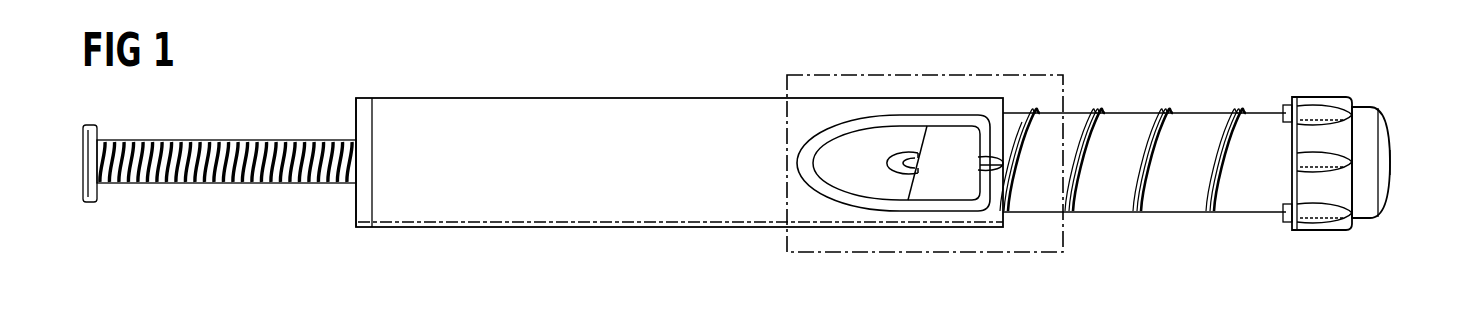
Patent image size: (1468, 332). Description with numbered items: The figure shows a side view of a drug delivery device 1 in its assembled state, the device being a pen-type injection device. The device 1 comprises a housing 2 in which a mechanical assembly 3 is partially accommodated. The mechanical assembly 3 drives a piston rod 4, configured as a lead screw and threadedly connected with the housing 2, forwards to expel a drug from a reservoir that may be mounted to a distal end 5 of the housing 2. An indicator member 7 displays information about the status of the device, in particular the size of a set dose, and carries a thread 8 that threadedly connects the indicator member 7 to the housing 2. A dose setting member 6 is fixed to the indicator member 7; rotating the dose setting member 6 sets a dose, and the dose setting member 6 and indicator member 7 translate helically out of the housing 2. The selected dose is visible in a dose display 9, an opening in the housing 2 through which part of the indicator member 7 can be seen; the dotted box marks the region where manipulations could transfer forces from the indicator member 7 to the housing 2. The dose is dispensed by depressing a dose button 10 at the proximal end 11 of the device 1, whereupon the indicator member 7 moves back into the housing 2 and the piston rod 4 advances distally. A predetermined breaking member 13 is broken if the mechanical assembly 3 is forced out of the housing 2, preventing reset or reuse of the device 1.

The drug delivery device 1 is at (518, 52).
The housing 2 is at (617, 212).
The mechanical assembly 3 is at (1199, 95).
The piston rod 4 is at (231, 150).
The distal end 5 is at (360, 112).
The dose setting member 6 is at (1320, 135).
The indicator member 7 is at (1184, 192).
The thread 8 is at (1145, 182).
The dose display 9 is at (933, 190).
The dose button 10 is at (1386, 155).
The proximal end 11 is at (1395, 238).
The predetermined breaking member 13 is at (1249, 192).